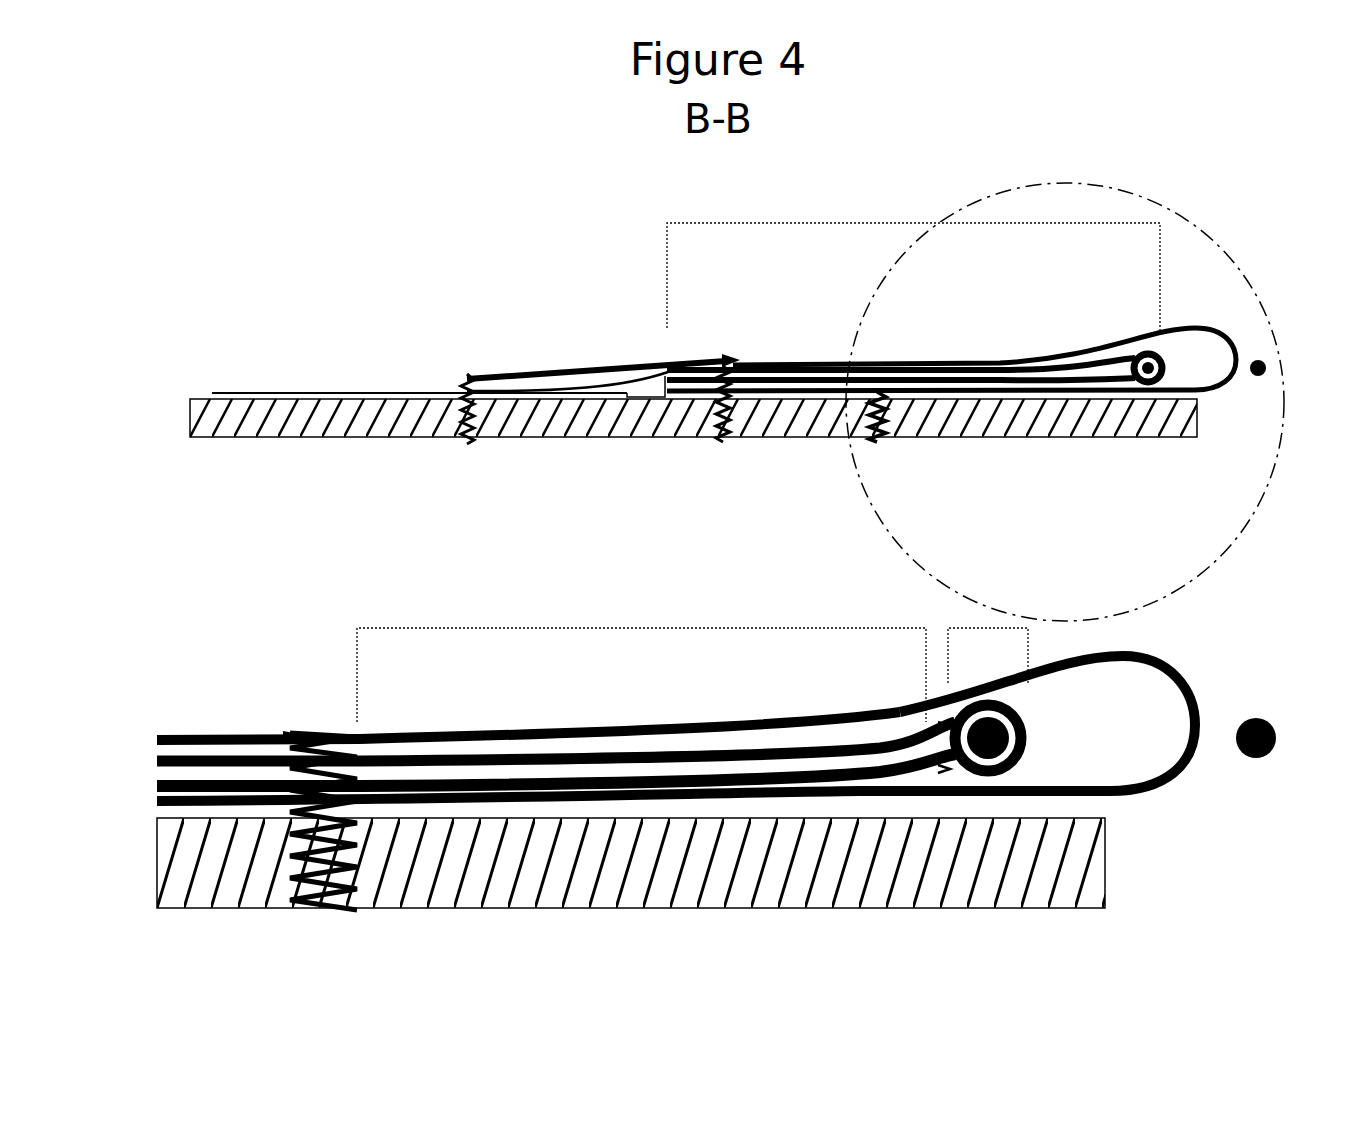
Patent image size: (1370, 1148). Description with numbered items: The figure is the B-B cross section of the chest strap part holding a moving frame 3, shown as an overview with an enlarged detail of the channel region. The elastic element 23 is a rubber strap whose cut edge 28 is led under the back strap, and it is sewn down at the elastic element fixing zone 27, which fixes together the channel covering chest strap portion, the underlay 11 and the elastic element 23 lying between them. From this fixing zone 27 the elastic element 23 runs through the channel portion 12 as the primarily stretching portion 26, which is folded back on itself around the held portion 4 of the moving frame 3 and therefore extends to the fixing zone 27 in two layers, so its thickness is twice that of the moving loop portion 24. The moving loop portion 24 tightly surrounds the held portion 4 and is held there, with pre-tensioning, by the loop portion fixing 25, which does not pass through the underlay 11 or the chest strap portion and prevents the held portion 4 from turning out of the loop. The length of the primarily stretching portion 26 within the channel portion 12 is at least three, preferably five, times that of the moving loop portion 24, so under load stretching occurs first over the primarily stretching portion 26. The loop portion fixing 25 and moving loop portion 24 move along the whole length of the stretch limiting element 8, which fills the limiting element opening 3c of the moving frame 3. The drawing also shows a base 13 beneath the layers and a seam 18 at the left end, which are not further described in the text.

The moving frame 3 is at (1278, 733).
The limiting element opening 3c is at (1215, 358).
The held portion 4 is at (1010, 735).
The stretch limiting element 8 is at (1170, 657).
The underlay 11 is at (650, 375).
The channel portion 12 is at (557, 745).
The support surface 13 is at (1010, 440).
The fixing seam 18 is at (466, 377).
The elastic element 23 is at (913, 223).
The moving loop portion 24 is at (988, 628).
The loop portion fixing 25 is at (1120, 365).
The primarily stretching portion 26 is at (642, 628).
The elastic element fixing zone 27 is at (877, 385).
The cut edge 28 is at (658, 370).